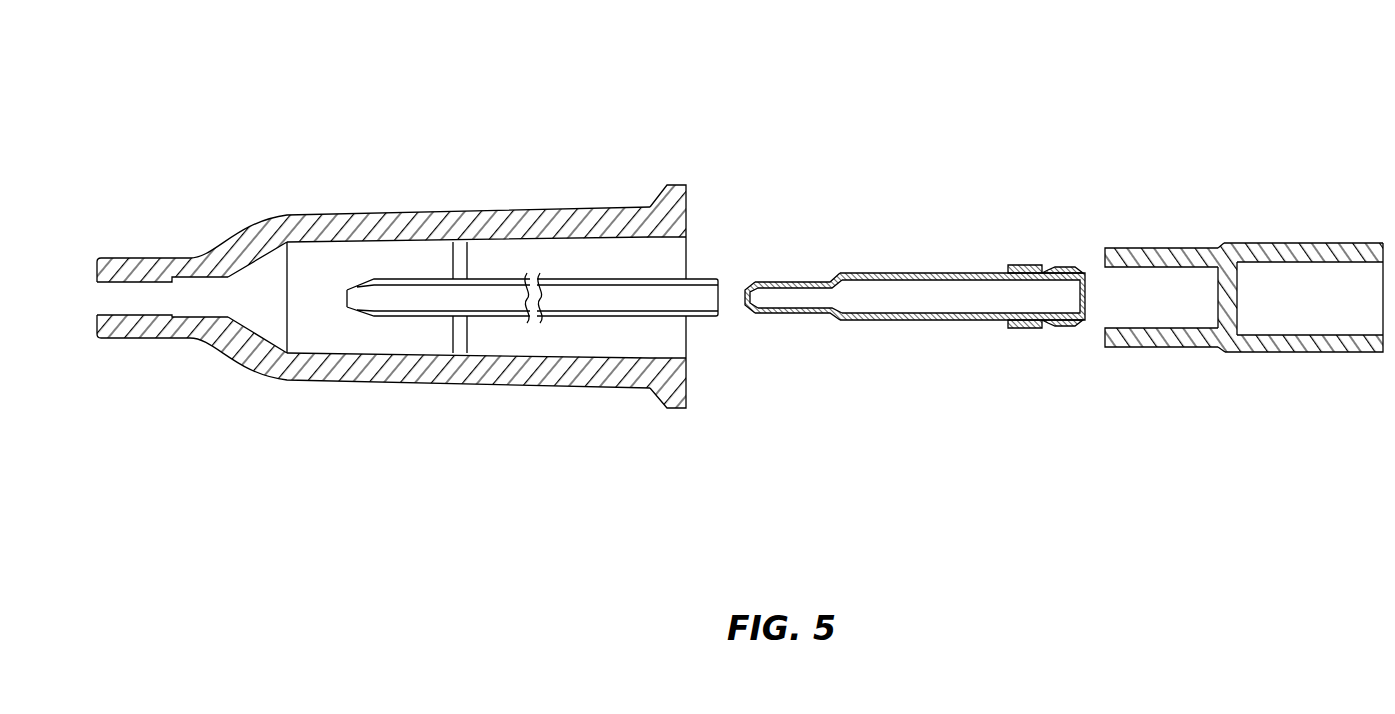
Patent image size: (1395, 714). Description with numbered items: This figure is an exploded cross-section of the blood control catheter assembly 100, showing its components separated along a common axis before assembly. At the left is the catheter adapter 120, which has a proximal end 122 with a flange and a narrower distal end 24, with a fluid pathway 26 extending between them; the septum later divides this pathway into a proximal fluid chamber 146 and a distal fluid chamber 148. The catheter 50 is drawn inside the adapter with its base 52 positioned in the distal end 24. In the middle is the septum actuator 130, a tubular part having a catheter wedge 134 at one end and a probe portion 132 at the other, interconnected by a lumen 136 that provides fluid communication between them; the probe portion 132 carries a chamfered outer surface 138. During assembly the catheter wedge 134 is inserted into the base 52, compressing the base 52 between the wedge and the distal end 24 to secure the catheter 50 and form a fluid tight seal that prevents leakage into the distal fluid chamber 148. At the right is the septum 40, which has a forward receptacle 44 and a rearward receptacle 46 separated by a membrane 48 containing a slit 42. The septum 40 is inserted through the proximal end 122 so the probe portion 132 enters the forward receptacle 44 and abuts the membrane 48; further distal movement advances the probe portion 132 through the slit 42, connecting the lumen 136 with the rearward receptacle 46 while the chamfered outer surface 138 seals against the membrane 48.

The blood control catheter assembly 100 is at (318, 126).
The catheter adapter 120 is at (415, 212).
The proximal end 122 is at (673, 185).
The fluid pathway 26 is at (662, 255).
The distal end 24 is at (96, 330).
The distal fluid chamber 148 is at (305, 322).
The proximal fluid chamber 146 is at (627, 340).
The catheter 50 is at (482, 317).
The base 52 is at (713, 318).
The septum actuator 130 is at (935, 321).
The catheter wedge 134 is at (797, 314).
The lumen 136 is at (977, 298).
The chamfered outer surface 138 is at (1058, 268).
The probe portion 132 is at (1060, 330).
The septum 40 is at (1242, 350).
The forward receptacle 44 is at (1160, 314).
The slit 42 is at (1238, 303).
The membrane 48 is at (1242, 285).
The rearward receptacle 46 is at (1342, 292).